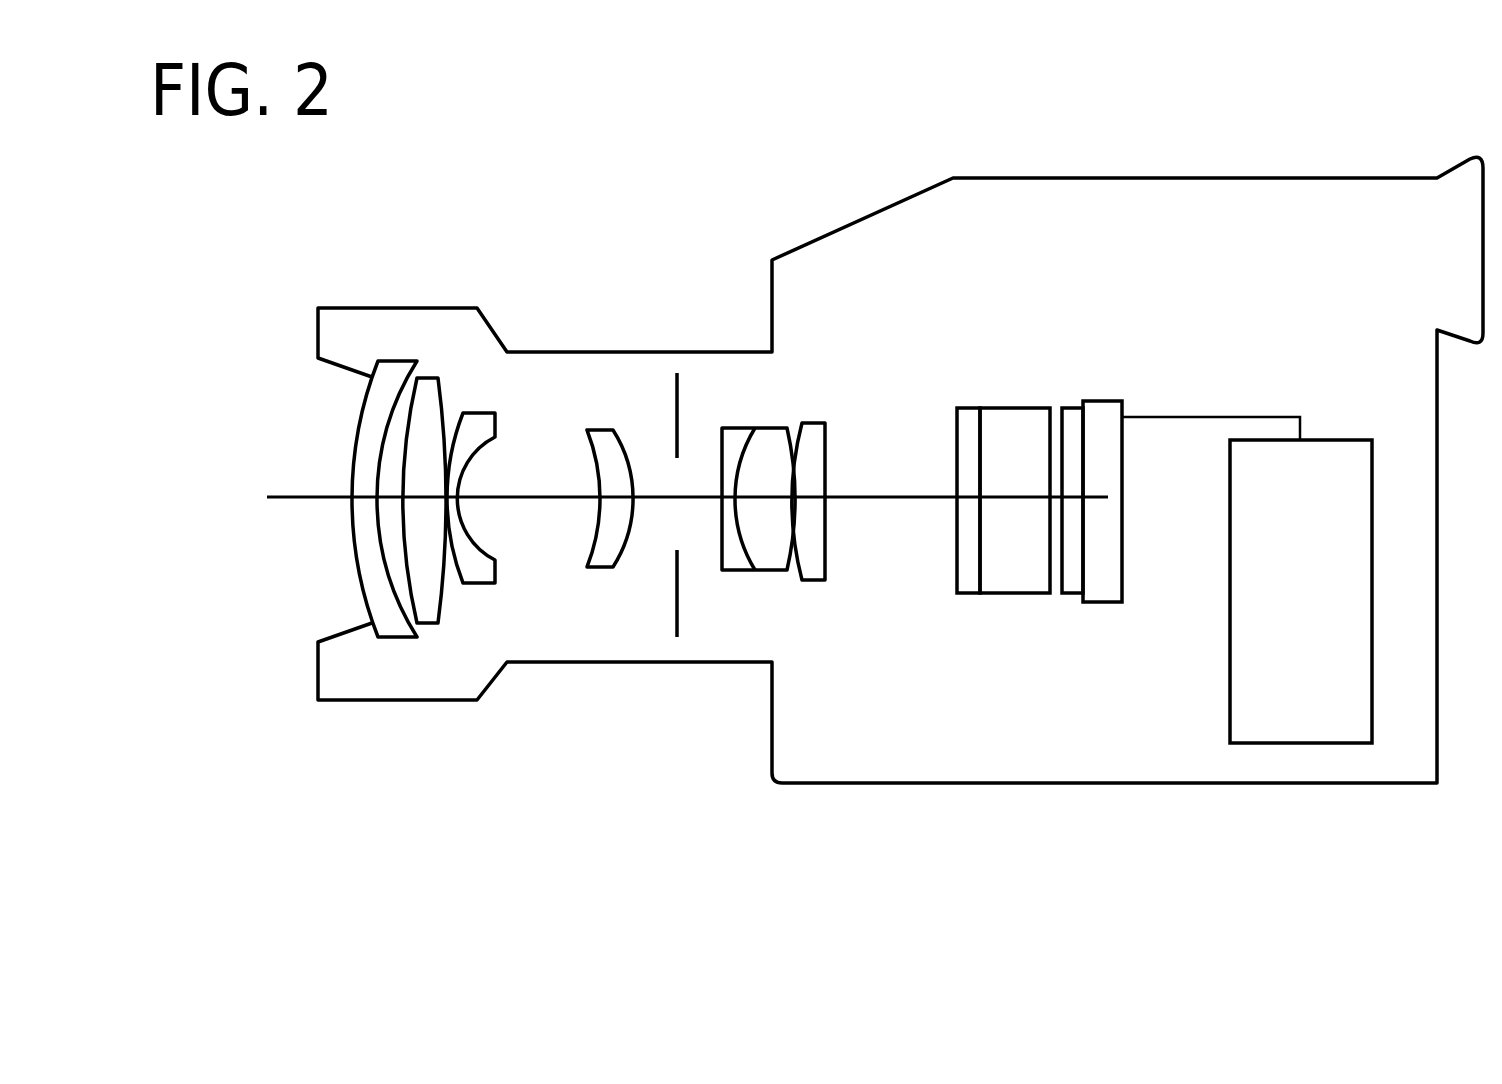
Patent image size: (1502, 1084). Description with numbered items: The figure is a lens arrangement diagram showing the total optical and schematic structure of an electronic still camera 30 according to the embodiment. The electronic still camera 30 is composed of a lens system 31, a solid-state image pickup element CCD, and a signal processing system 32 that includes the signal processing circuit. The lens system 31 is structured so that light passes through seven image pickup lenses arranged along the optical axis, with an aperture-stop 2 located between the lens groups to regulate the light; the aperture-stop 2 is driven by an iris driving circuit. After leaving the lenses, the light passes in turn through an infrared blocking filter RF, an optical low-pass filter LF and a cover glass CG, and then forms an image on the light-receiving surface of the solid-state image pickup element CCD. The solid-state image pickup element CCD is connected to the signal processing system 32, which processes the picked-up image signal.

The aperture-stop 2 is at (677, 593).
The electronic still camera 30 is at (855, 208).
The lens system 31 is at (1100, 340).
The signal processing system 32 is at (1337, 440).
The infrared blocking filter RF is at (968, 593).
The optical low-pass filter LF is at (1015, 593).
The cover glass CG is at (1072, 593).
The solid-state image pickup element CCD is at (1110, 602).